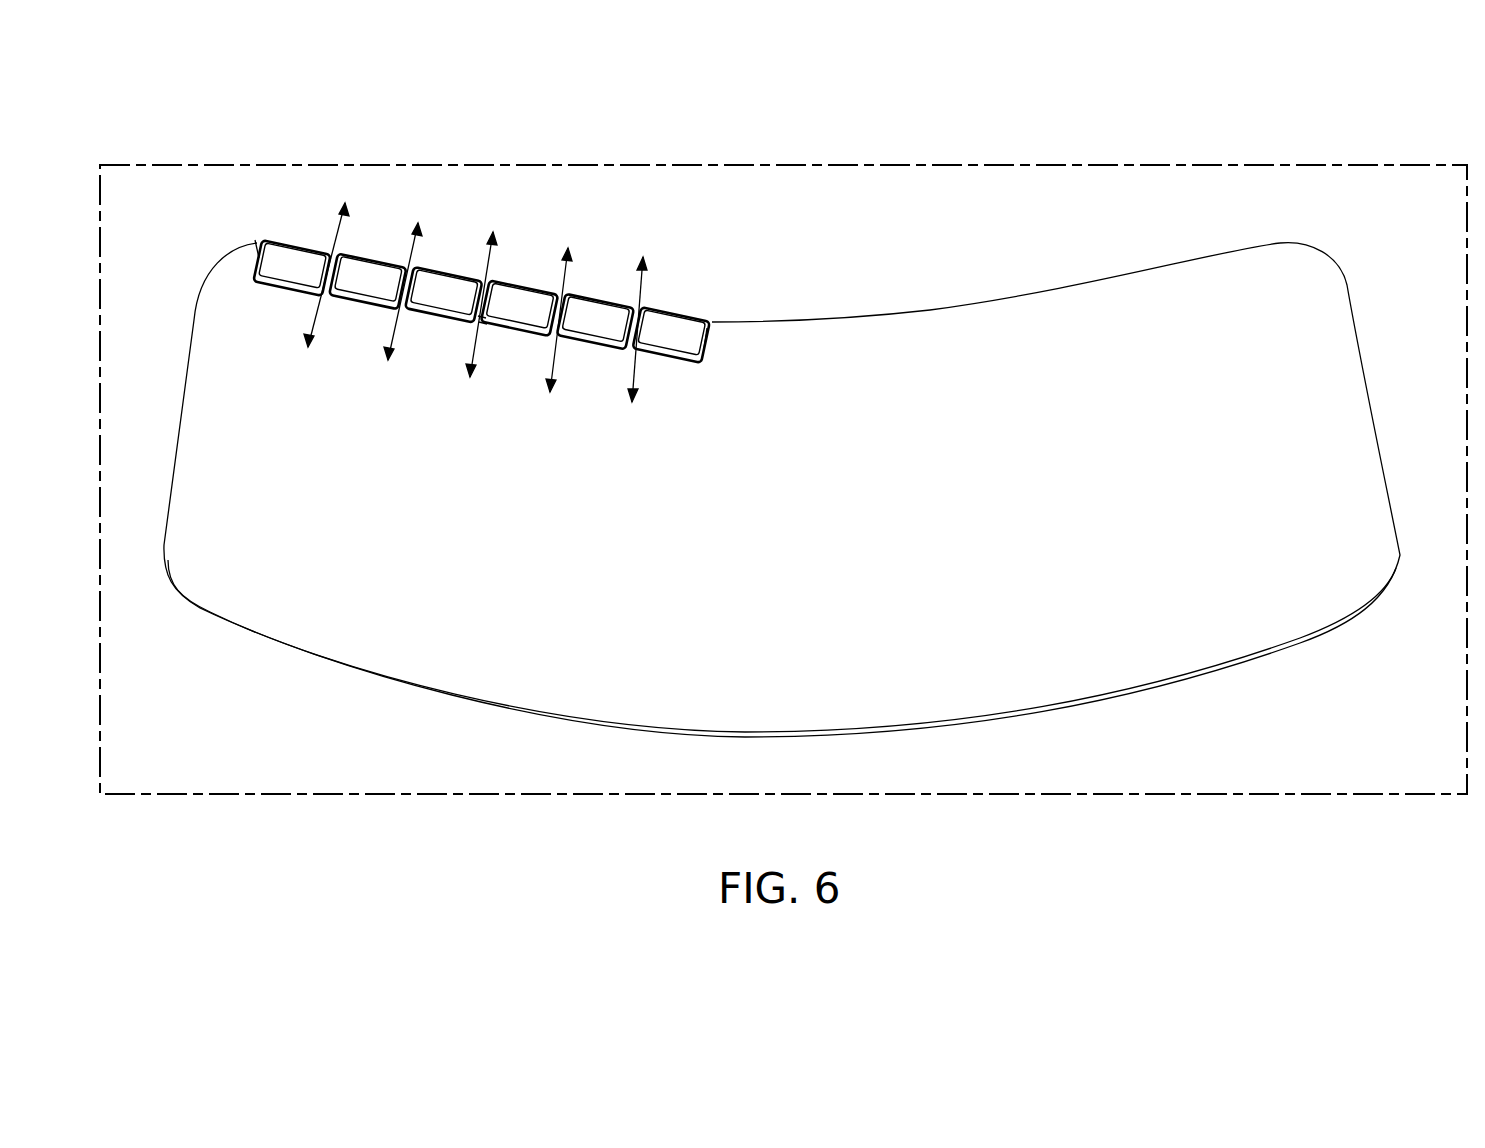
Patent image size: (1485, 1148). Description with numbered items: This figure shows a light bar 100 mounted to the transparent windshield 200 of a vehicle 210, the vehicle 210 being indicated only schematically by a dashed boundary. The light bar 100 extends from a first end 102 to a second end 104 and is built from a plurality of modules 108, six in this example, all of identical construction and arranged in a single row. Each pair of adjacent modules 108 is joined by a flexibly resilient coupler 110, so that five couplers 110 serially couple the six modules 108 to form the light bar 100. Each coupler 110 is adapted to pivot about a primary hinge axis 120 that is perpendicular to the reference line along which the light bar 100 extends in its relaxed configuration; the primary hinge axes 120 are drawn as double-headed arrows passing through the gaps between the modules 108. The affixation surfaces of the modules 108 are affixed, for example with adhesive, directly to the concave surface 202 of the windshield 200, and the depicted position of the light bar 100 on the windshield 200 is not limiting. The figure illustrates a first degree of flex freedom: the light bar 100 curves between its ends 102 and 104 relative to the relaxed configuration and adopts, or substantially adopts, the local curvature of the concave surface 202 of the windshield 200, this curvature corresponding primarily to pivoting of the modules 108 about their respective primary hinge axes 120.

The light bar 100 is at (478, 291).
The first end 102 is at (258, 248).
The second end 104 is at (710, 338).
The module 108 is at (598, 318).
The flexibly resilient coupler 110 is at (491, 320).
The primary hinge axis 120 is at (318, 326).
The windshield 200 is at (1172, 268).
The concave surface 202 is at (930, 330).
The vehicle 210 is at (1077, 165).